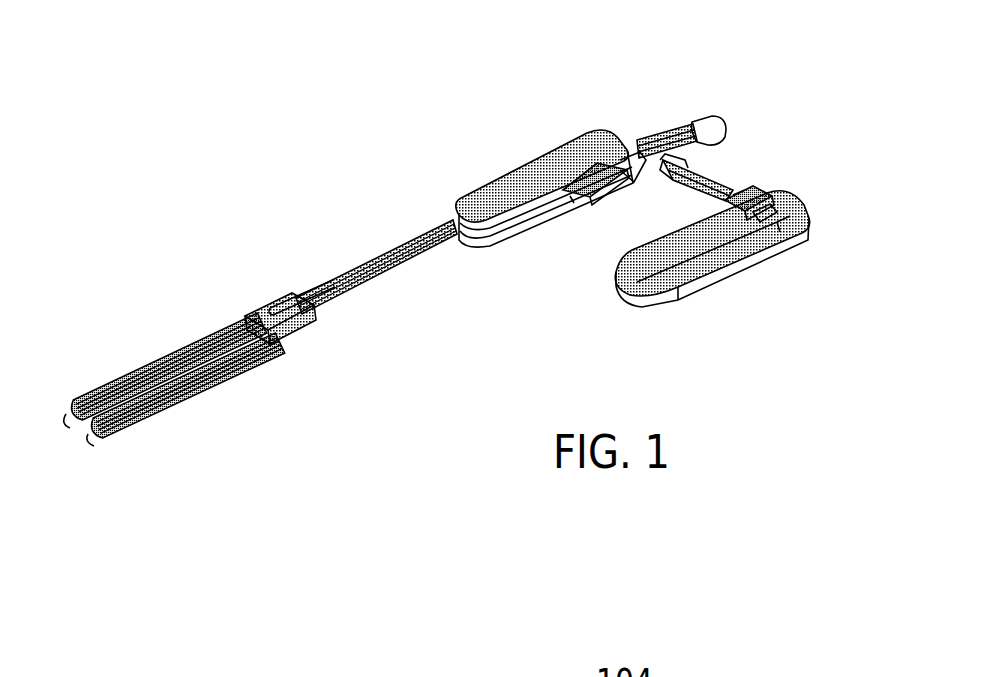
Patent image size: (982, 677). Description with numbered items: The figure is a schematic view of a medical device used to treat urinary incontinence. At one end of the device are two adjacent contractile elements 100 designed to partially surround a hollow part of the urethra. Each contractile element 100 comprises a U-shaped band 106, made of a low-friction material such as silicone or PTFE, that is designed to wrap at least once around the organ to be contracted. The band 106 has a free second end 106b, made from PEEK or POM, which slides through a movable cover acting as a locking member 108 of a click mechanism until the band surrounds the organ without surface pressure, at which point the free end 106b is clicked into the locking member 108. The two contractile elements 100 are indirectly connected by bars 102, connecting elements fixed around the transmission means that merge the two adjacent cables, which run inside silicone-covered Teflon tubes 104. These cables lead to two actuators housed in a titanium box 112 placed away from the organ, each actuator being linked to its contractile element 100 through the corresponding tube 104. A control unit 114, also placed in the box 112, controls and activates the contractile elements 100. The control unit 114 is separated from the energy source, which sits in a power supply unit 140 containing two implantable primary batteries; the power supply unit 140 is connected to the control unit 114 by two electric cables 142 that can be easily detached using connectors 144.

The contractile element 100 is at (213, 405).
The bar 102 is at (420, 242).
The Teflon tube 104 is at (247, 327).
The U-shaped band 106 is at (167, 359).
The second end 106b is at (93, 438).
The locking member 108 is at (283, 341).
The box 112 is at (531, 178).
The control unit 114 is at (570, 116).
The power supply unit 140 is at (707, 243).
The electric cable 142 is at (718, 124).
The connector 144 is at (765, 190).